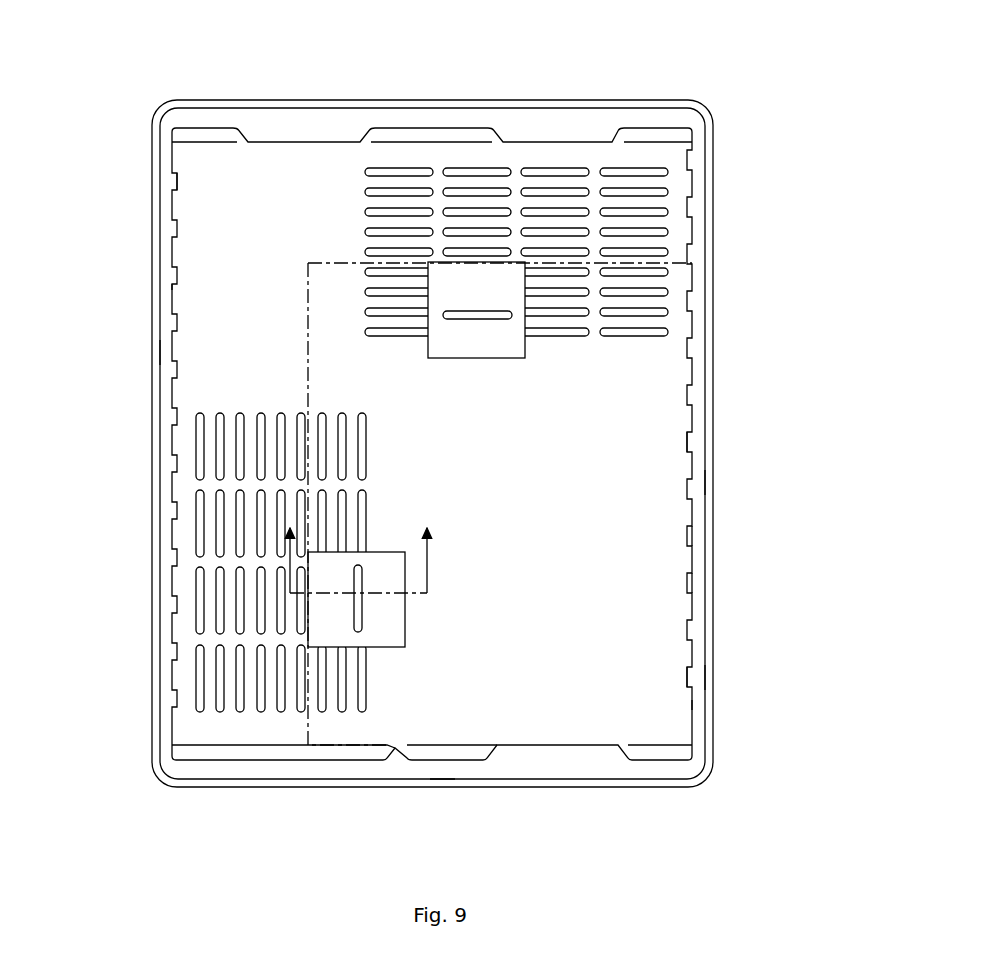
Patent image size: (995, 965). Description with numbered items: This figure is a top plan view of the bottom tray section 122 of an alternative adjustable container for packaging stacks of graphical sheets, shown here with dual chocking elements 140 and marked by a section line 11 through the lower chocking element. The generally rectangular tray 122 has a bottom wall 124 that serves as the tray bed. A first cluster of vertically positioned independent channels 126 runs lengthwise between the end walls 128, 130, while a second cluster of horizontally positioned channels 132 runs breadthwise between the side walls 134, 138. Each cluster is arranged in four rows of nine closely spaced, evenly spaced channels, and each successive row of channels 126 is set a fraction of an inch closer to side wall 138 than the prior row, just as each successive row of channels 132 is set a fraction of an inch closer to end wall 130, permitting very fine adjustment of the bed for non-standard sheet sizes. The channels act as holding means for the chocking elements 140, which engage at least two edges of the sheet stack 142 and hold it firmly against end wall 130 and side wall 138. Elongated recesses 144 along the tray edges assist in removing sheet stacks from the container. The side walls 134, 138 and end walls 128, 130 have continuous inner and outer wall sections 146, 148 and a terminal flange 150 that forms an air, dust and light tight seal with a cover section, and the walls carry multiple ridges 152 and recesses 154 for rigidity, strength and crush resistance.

The section line 11- 11 is at (374, 557).
The bottom tray section 122 is at (728, 180).
The bottom wall 124 is at (277, 190).
The vertically positioned independent channels 126 is at (193, 600).
The end wall 128 is at (497, 98).
The end wall 130 is at (313, 790).
The horizontally positioned channels 132 is at (555, 172).
The side wall 134 is at (147, 248).
The side wall 138 is at (712, 273).
The chocking element 140 is at (490, 362).
The sheet stack 142 is at (305, 318).
The elongated recess 144 is at (215, 137).
The inner wall section 146 is at (686, 445).
The outer wall section 148 is at (708, 482).
The terminal flange 150 is at (154, 352).
The ridge 152 is at (177, 290).
The recess 154 is at (177, 185).